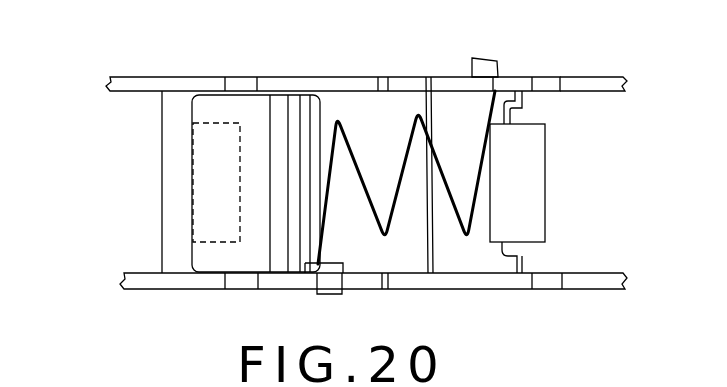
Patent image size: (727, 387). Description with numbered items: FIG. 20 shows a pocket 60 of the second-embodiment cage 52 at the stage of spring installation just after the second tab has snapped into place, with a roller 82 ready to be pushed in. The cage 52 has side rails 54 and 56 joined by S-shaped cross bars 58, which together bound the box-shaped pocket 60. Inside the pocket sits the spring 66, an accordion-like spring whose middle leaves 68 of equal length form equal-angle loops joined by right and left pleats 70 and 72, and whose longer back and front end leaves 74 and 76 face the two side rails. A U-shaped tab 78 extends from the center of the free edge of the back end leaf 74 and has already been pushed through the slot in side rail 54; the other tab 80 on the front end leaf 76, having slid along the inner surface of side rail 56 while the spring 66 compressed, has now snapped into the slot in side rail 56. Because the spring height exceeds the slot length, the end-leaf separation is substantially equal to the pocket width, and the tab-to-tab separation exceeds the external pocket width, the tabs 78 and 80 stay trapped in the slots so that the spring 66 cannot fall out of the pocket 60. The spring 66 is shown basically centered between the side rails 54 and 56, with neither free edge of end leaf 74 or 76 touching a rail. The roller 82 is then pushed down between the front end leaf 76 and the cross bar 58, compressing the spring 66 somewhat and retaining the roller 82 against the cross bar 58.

The cage 52 is at (174, 74).
The side rail 54 is at (600, 83).
The side rail 56 is at (580, 283).
The cross bar 58 is at (215, 177).
The pocket 60 is at (327, 107).
The spring 66 is at (342, 112).
The middle leaves 68 is at (448, 193).
The right pleats 70 is at (467, 240).
The left pleats 72 is at (348, 118).
The back end leaf 74 is at (487, 168).
The front end leaf 76 is at (323, 190).
The tab 78 is at (497, 68).
The tab 80 is at (350, 268).
The roller 82 is at (262, 120).